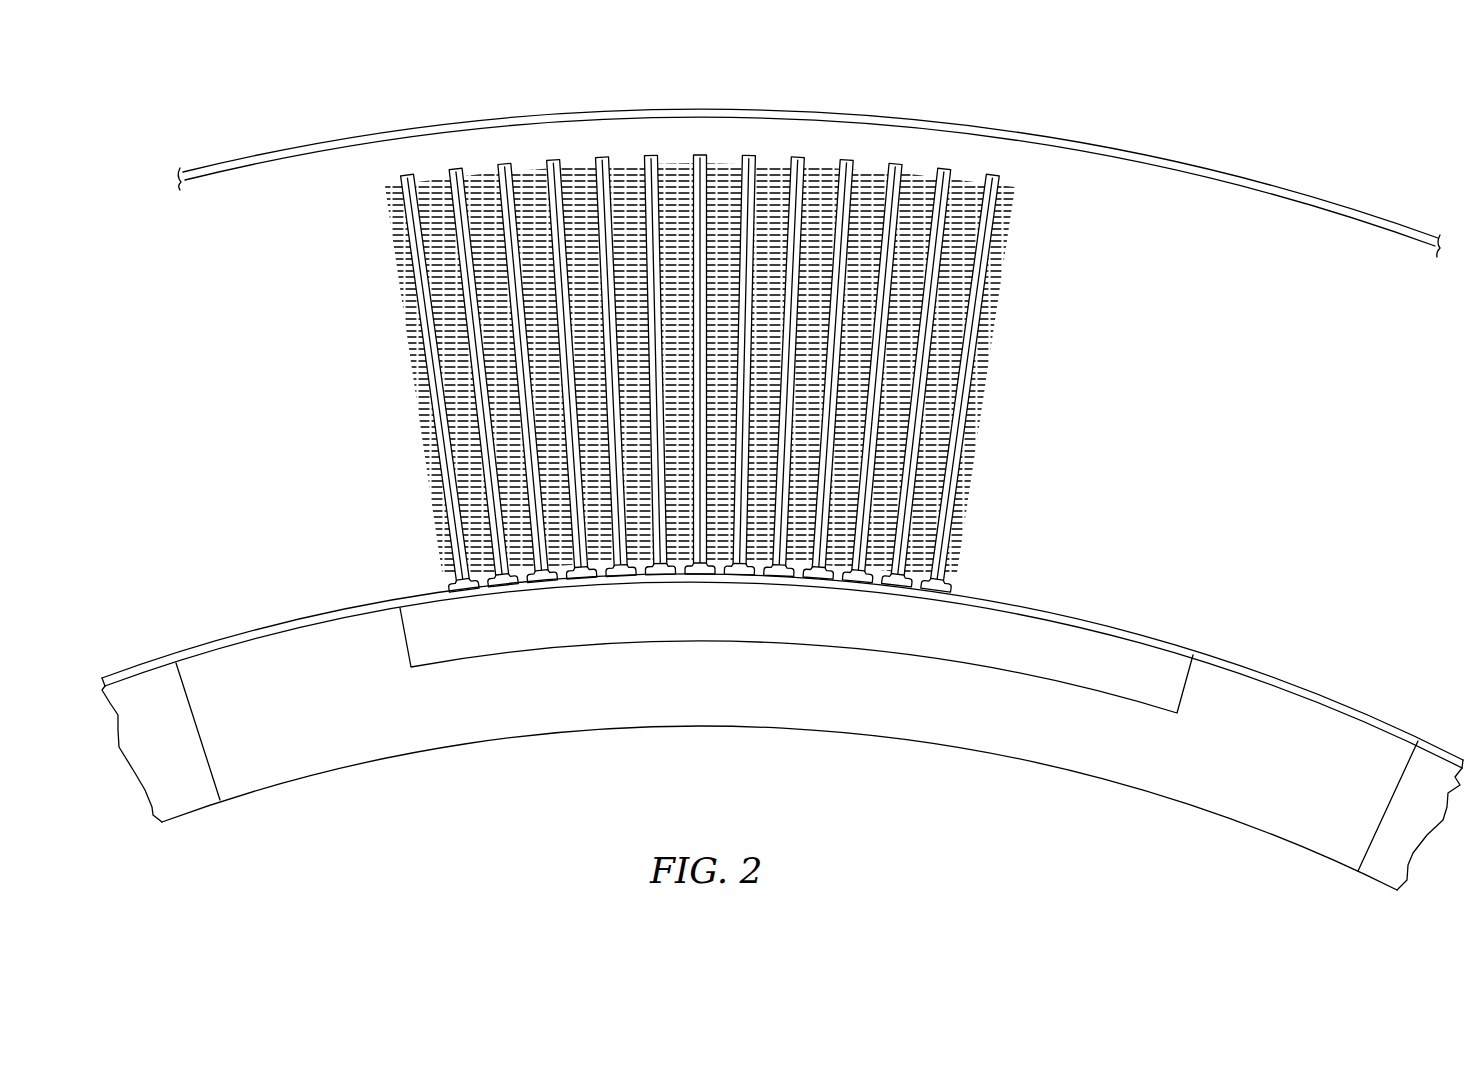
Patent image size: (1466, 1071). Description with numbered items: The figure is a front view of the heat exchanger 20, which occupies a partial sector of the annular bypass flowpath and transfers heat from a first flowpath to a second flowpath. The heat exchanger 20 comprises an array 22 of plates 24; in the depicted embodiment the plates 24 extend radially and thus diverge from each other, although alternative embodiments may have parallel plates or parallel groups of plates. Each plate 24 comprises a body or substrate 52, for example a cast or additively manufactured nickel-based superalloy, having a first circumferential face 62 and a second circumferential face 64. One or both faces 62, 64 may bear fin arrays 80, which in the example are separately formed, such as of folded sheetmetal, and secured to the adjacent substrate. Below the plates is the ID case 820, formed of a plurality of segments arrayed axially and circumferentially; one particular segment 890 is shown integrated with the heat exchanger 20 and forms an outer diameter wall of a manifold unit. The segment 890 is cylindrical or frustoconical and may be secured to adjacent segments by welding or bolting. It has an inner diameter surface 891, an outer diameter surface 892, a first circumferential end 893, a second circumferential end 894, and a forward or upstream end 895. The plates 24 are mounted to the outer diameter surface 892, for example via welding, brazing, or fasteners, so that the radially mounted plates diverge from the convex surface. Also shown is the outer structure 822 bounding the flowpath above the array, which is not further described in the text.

The heat exchanger 20 is at (809, 143).
The array 22 is at (1009, 325).
The plate 24 is at (1009, 382).
The body or substrate 52 is at (964, 378).
The first circumferential face 62 is at (980, 375).
The second circumferential face 64 is at (1010, 178).
The fin array 80 is at (739, 322).
The ID case 820 is at (778, 675).
The outer casing 822 is at (868, 117).
The segment 890 is at (778, 709).
The inner diameter surface 891 is at (260, 638).
The outer diameter surface 892 is at (258, 630).
The first circumferential end 893 is at (1423, 738).
The second circumferential end 894 is at (165, 656).
The forward/upstream end 895 is at (782, 648).